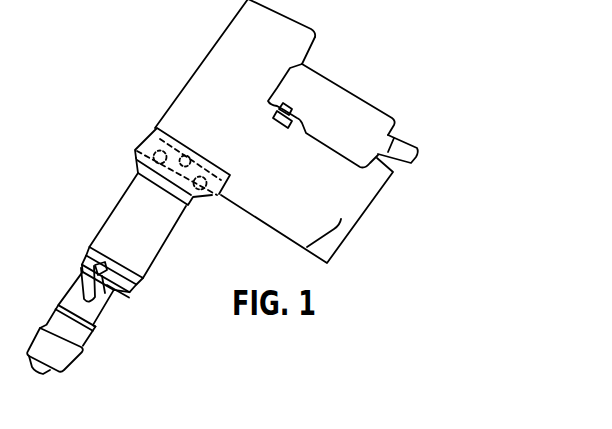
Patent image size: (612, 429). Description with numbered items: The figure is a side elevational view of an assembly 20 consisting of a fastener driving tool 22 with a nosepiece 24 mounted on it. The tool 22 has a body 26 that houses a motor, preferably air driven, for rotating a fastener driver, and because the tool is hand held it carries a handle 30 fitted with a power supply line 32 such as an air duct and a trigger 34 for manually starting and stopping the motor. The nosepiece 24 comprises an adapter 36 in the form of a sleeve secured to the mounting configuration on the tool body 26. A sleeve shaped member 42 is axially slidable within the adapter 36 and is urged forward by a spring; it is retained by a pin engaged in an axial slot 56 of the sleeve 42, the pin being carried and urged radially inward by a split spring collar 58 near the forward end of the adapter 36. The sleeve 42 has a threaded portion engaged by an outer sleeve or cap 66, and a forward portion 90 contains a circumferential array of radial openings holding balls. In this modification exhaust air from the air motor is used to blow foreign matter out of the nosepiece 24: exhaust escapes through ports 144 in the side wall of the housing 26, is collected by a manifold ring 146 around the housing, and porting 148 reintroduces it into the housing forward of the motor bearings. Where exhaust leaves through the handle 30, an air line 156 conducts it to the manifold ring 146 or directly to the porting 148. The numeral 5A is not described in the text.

The assembly 20 is at (125, 82).
The fastener driving tool 22 is at (198, 53).
The nosepiece 24 is at (64, 237).
The body 26 is at (299, 26).
The handle 30 is at (353, 95).
The power supply line 32 is at (412, 144).
The trigger 34 is at (282, 128).
The adapter 36 is at (160, 238).
The sleeve shaped member 42 is at (104, 305).
The axial slot 56 is at (82, 291).
The split spring collar 58 is at (131, 287).
The slot 5A is at (107, 264).
The outer sleeve or cap 66 is at (85, 344).
The forward portion 90 is at (45, 372).
The ports 144 is at (197, 149).
The manifold ring 146 is at (144, 140).
The porting 148 is at (140, 162).
The air line 156 is at (356, 218).